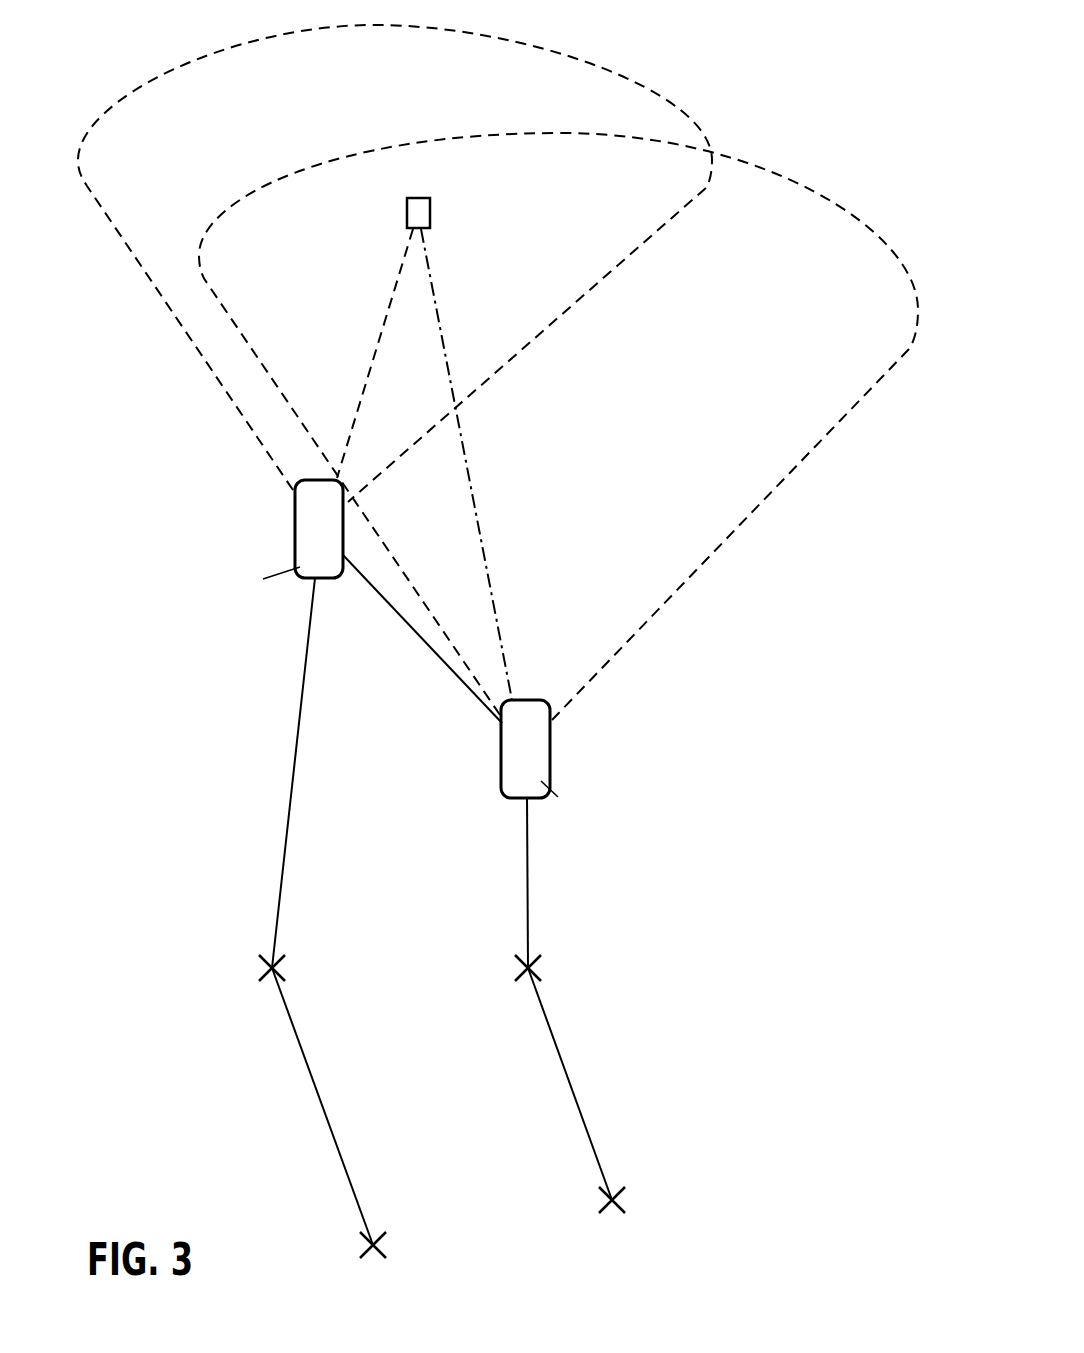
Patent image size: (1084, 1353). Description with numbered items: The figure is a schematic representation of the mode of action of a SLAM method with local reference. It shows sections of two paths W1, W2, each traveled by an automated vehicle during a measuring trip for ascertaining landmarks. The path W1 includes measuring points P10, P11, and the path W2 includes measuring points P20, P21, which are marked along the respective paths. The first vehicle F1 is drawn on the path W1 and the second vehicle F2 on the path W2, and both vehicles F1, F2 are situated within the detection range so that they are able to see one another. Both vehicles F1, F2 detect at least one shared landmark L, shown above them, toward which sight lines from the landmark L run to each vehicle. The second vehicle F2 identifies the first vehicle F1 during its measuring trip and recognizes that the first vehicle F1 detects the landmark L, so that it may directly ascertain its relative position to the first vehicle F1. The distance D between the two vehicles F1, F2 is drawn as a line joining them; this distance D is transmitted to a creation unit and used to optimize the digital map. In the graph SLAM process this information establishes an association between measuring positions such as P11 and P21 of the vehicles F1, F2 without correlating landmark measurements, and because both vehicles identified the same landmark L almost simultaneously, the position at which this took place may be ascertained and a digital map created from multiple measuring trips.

The landmark L is at (432, 213).
The first vehicle F1 is at (295, 538).
The second vehicle F2 is at (551, 750).
The distance between two vehicles D is at (417, 635).
The path W1 is at (284, 832).
The path W2 is at (528, 880).
The measuring point P10 is at (362, 1245).
The measuring point P11 is at (260, 968).
The measuring point P20 is at (622, 1200).
The measuring point P21 is at (542, 968).